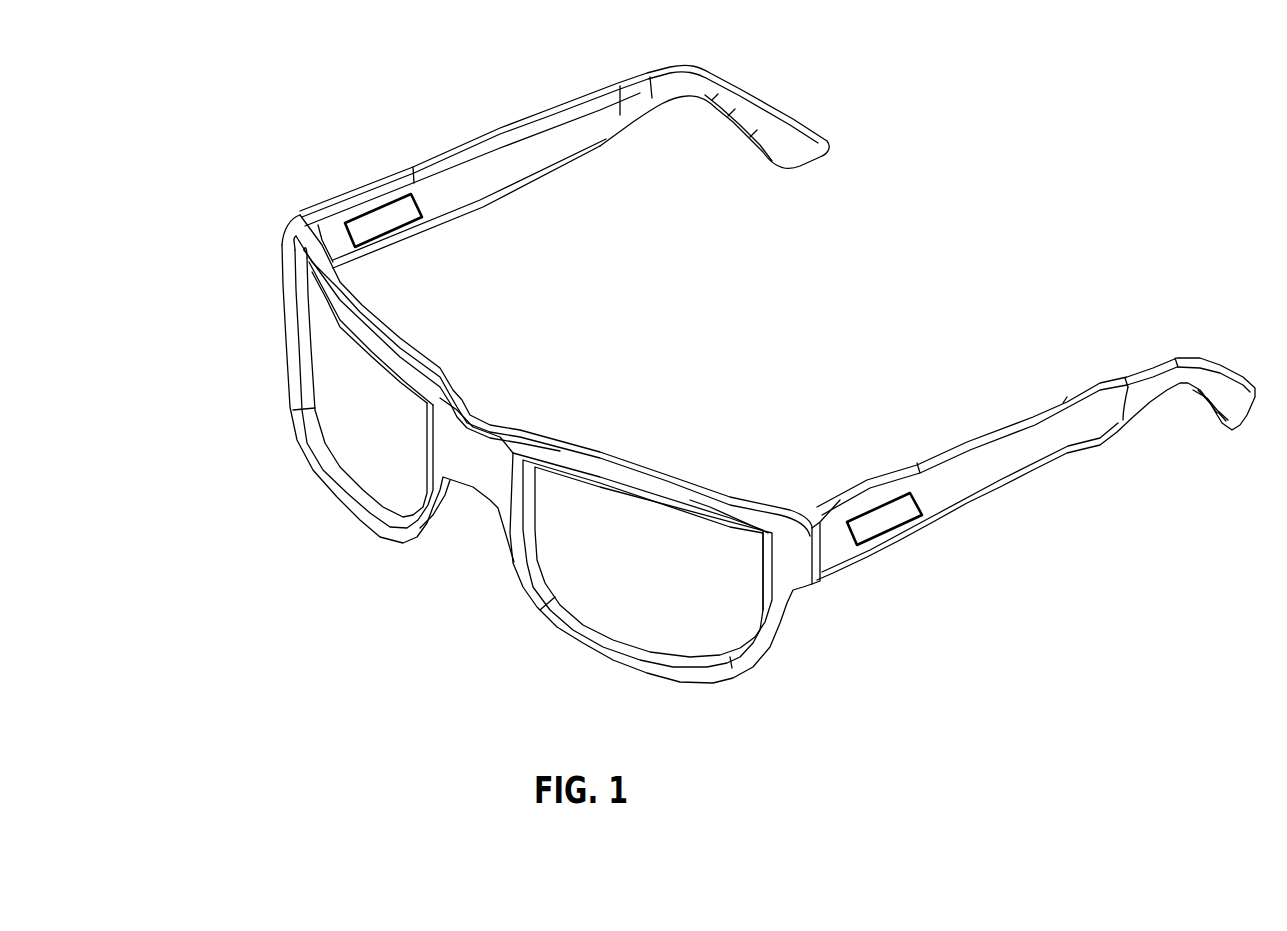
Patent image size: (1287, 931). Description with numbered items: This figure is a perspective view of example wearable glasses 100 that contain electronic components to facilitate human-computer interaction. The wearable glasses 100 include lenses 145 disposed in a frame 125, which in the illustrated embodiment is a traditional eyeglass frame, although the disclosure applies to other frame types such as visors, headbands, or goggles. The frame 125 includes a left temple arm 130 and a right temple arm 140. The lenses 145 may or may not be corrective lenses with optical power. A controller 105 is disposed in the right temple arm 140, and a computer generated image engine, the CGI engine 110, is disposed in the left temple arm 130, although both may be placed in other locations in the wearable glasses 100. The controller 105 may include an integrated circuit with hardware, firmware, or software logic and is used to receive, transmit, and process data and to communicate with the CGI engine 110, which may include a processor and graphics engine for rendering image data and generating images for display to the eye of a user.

The wearable glasses 100 is at (303, 150).
The controller 105 is at (515, 233).
The CGI engine 110 is at (966, 560).
The frame 125 is at (287, 242).
The left temple arm 130 is at (1036, 469).
The right temple arm 140 is at (564, 166).
The lenses 145 is at (346, 427).